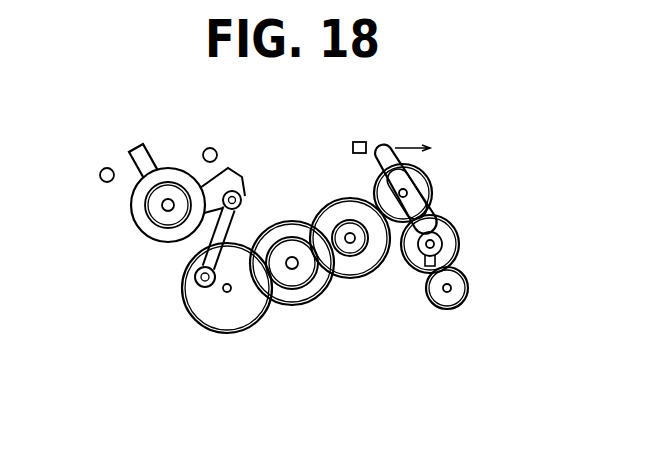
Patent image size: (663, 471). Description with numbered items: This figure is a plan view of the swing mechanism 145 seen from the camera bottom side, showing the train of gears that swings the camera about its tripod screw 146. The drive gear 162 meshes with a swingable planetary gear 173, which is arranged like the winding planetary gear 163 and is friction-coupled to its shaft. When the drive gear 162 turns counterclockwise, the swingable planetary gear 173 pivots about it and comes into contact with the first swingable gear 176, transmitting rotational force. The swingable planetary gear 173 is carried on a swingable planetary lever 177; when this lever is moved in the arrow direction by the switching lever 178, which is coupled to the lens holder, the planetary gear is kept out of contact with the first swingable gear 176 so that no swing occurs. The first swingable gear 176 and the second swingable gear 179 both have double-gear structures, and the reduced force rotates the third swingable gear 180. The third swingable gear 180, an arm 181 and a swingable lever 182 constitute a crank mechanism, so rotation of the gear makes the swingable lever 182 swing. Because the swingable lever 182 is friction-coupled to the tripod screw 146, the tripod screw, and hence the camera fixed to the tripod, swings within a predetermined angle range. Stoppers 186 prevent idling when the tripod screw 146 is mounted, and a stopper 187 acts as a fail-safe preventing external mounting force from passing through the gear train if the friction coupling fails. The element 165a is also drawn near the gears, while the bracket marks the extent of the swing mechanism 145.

The swing mechanism 145 is at (498, 387).
The tripod screw 146 is at (135, 218).
The drive gear 162 is at (450, 222).
The winding planetary gear 163 is at (445, 310).
The pin 165a is at (457, 270).
The swingable planetary gear 173 is at (377, 181).
The first swingable gear 176 is at (327, 198).
The swingable planetary lever 177 is at (388, 147).
The switching lever 178 is at (360, 142).
The second swingable gear 179 is at (303, 312).
The third swingable gear 180 is at (185, 312).
The arm 181 is at (190, 259).
The swingable lever 182 is at (233, 166).
The stoppers 186 is at (207, 148).
The stopper 187 is at (418, 267).